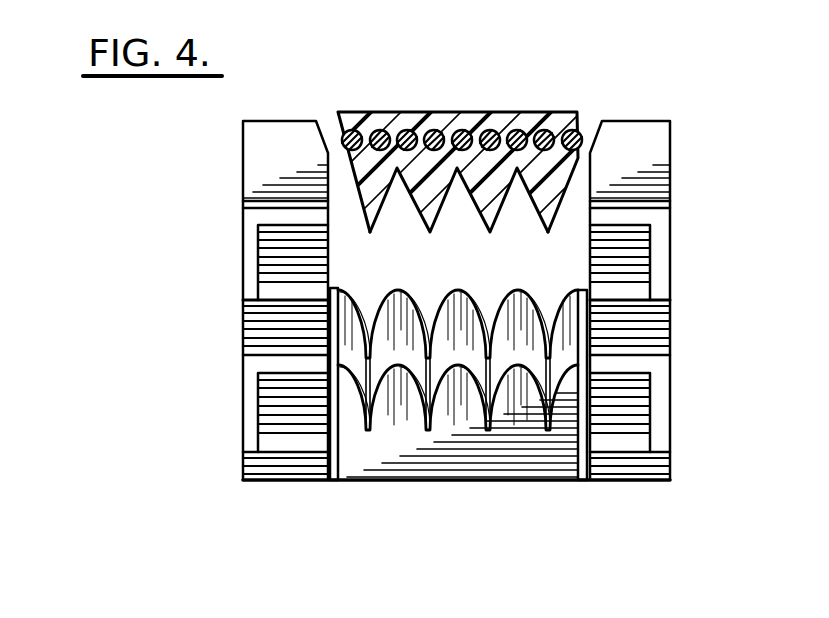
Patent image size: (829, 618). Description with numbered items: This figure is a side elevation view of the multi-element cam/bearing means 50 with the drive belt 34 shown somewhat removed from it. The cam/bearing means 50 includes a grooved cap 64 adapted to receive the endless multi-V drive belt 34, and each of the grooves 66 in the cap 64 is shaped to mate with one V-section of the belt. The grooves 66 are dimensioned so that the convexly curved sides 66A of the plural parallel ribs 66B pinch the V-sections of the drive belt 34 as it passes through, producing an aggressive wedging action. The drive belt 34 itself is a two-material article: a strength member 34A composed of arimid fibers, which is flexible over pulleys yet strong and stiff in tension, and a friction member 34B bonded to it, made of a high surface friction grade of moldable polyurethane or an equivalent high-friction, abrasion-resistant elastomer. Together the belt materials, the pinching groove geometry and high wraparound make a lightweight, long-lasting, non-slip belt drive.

The drive belt 34 is at (530, 108).
The strength member 34A is at (380, 130).
The friction member 34B is at (372, 214).
The cam/bearing means 50 is at (556, 492).
The grooved cap 64 is at (372, 455).
The grooves 66 is at (547, 325).
The convexly curved sides 66A is at (385, 323).
The plural parallel ribs 66B is at (392, 333).